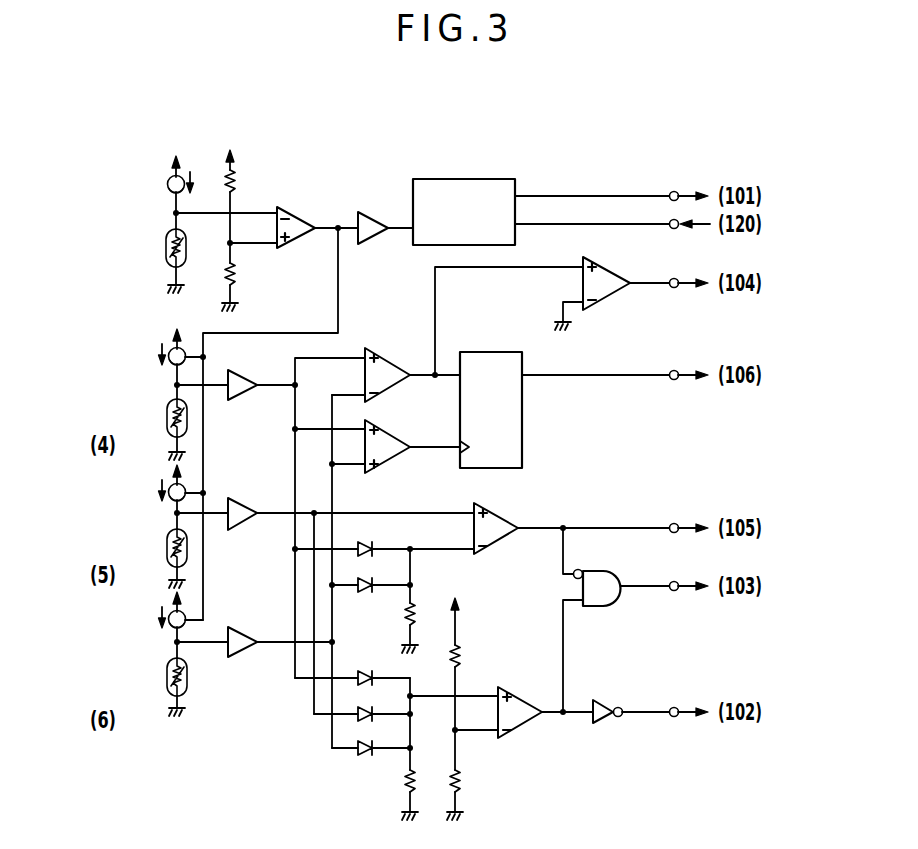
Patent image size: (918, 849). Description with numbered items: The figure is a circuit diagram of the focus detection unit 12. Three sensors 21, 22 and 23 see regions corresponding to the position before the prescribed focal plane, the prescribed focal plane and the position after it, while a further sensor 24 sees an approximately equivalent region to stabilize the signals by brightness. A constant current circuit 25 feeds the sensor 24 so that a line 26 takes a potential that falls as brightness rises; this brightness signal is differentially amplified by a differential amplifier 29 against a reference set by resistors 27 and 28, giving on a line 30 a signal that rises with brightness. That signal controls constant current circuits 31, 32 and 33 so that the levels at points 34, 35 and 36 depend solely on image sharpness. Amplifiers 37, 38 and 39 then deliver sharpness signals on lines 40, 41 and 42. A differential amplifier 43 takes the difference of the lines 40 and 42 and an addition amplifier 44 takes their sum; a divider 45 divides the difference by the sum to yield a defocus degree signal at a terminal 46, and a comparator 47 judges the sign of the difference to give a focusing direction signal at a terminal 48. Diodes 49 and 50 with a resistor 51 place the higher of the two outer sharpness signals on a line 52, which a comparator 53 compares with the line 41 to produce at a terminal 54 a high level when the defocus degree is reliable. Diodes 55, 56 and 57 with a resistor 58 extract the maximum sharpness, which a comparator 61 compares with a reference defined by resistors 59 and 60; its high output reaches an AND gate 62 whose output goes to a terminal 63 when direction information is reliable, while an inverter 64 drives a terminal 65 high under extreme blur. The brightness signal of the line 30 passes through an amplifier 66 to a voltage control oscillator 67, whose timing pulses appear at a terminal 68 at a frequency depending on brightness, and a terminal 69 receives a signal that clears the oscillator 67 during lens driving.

The focus detection unit 12 is at (527, 158).
The sensor 21 is at (167, 418).
The sensor 22 is at (167, 548).
The sensor 23 is at (167, 677).
The sensor 24 is at (166, 248).
The constant current circuit 25 is at (167, 182).
The line 26 is at (207, 212).
The resistor 27 is at (243, 196).
The resistor 28 is at (249, 275).
The differential amplifier 29 is at (303, 216).
The line 30 is at (338, 225).
The constant current circuit 31 is at (167, 355).
The constant current circuit 32 is at (167, 491).
The constant current circuit 33 is at (167, 619).
The point 34 is at (222, 383).
The point 35 is at (222, 511).
The point 36 is at (222, 640).
The amplifier 37 is at (240, 373).
The amplifier 38 is at (241, 501).
The amplifier 39 is at (241, 630).
The line 40 is at (273, 387).
The line 41 is at (272, 515).
The line 42 is at (272, 644).
The differential amplifier 43 is at (384, 355).
The addition amplifier 44 is at (400, 429).
The divider 45 is at (487, 352).
The terminal 46 is at (674, 380).
The comparator 47 is at (603, 266).
The terminal 48 is at (674, 288).
The diode 49 is at (372, 546).
The diode 50 is at (374, 583).
The resistor 51 is at (422, 601).
The line 52 is at (446, 551).
The comparator 53 is at (504, 513).
The terminal 54 is at (674, 523).
The diode 55 is at (365, 672).
The diode 56 is at (374, 710).
The diode 57 is at (372, 756).
The resistor 58 is at (422, 749).
The resistor 59 is at (468, 664).
The resistor 60 is at (467, 773).
The comparator 61 is at (517, 695).
The AND gate 62 is at (613, 572).
The terminal 63 is at (674, 582).
The inverter 64 is at (600, 700).
The terminal 65 is at (674, 707).
The amplifier 66 is at (373, 213).
The voltage control oscillator 67 is at (475, 179).
The terminal 68 is at (674, 191).
The terminal 69 is at (674, 229).